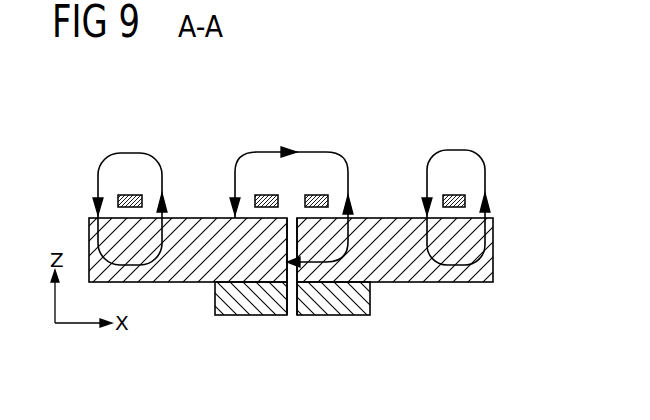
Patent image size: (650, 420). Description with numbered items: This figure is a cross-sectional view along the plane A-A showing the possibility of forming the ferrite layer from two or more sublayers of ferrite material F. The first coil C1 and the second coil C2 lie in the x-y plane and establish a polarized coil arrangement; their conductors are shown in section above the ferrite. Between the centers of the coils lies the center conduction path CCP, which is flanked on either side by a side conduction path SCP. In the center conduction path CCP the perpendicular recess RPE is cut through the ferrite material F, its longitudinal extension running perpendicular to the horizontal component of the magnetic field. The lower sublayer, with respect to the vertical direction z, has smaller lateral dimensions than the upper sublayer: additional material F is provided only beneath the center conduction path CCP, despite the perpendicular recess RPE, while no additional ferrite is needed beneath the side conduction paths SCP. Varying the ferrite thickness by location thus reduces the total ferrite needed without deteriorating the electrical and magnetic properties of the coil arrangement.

The side conduction path SCP is at (130, 147).
The center conduction path CCP is at (292, 145).
The first coil C1 is at (451, 196).
The second coil C2 is at (130, 195).
The perpendicular recess RPE is at (292, 315).
The ferrite material F is at (343, 308).